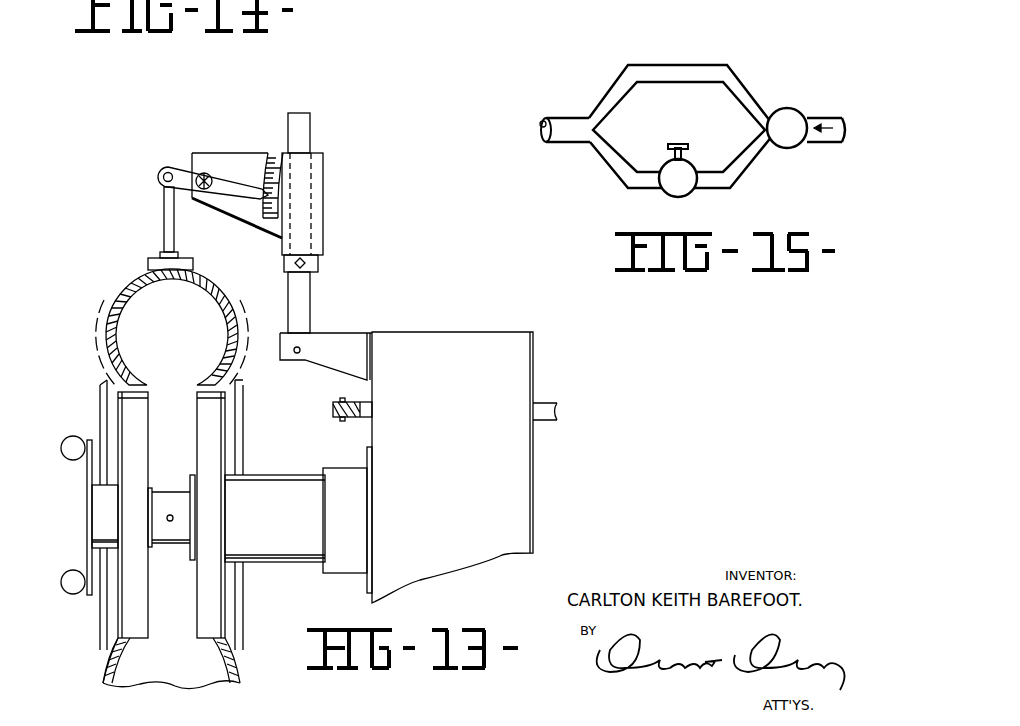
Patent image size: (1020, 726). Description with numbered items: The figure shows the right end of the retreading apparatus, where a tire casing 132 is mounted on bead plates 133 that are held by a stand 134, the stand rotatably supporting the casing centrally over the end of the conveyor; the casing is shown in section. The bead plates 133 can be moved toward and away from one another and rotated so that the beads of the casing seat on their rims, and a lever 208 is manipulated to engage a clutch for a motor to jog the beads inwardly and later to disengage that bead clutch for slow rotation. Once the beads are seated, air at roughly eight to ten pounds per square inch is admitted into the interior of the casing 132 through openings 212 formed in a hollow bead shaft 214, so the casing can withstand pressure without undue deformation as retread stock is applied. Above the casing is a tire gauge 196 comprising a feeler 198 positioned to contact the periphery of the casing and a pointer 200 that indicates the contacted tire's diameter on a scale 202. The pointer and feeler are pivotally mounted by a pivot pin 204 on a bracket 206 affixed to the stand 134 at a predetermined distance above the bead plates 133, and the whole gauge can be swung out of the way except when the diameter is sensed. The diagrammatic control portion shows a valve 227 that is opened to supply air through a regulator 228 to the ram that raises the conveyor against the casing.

In FIG. 13, the tire gauge 196 is at (175, 185).
In FIG. 13, the feeler 198 is at (155, 259).
In FIG. 13, the pointer 200 is at (258, 190).
In FIG. 13, the scale 202 is at (262, 216).
In FIG. 13, the pivot pin 204 is at (187, 158).
In FIG. 13, the bracket 206 is at (190, 200).
In FIG. 13, the lever 208 is at (334, 408).
In FIG. 13, the openings 212 is at (171, 514).
In FIG. 13, the hollow bead shaft 214 is at (152, 548).
In FIG. 13, the tire casing 132 is at (103, 677).
In FIG. 13, the bead plates 133 is at (212, 650).
In FIG. 13, the stand 134 is at (533, 470).
In FIG. 15, the valve 227 is at (798, 108).
In FIG. 15, the regulator 228 is at (690, 193).